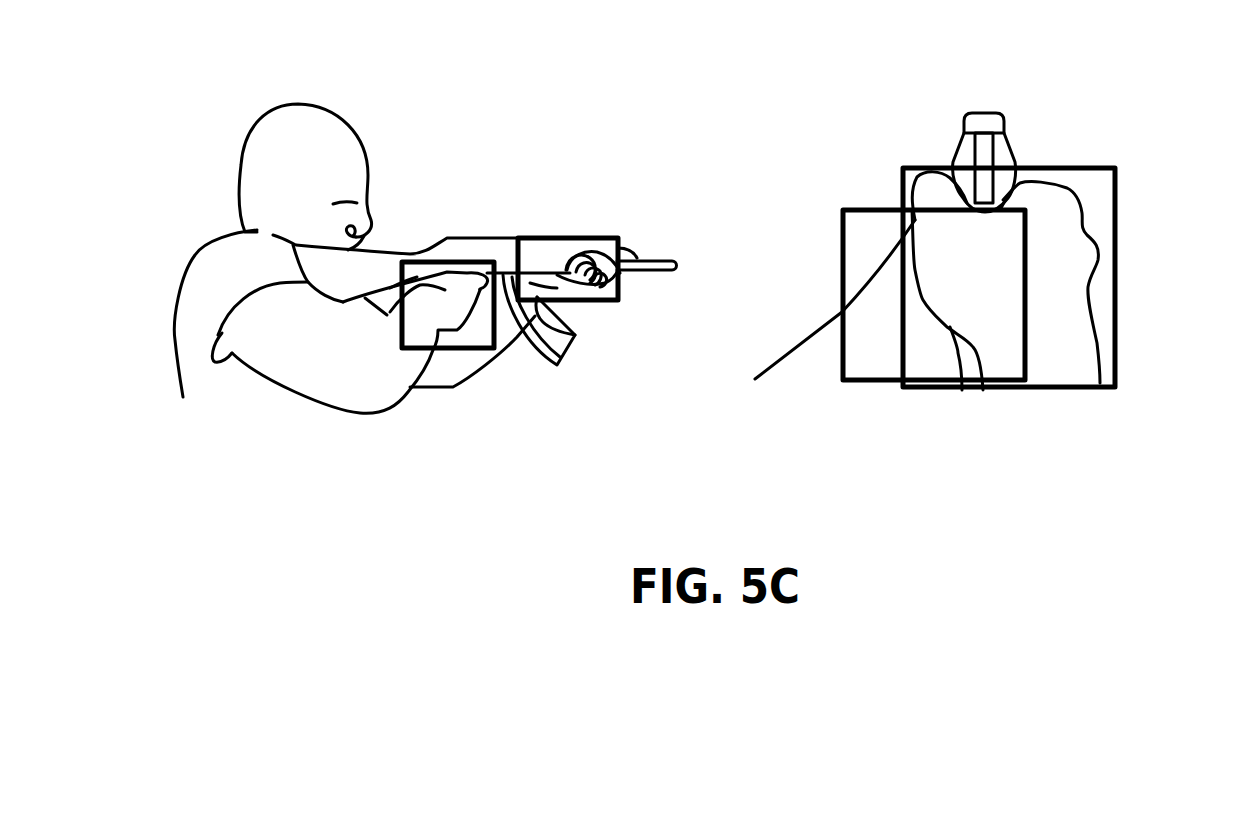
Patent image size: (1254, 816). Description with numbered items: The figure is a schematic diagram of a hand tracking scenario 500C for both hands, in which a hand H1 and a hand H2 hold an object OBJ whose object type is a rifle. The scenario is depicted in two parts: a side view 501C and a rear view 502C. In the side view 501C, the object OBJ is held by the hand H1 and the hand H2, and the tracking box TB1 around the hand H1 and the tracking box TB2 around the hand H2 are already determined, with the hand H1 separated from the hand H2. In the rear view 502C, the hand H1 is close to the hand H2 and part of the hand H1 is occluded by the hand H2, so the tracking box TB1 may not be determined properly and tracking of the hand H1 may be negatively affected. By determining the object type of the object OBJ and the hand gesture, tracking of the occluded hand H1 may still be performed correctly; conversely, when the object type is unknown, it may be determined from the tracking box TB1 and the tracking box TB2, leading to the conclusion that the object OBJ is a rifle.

The side view 501C is at (220, 77).
The rear view 502C is at (851, 80).
The hand tracking scenario 500C is at (1215, 505).
The object OBJ is at (487, 247).
The hand H1 is at (566, 262).
The hand H2 is at (448, 292).
The tracking box TB1 is at (607, 303).
The tracking box TB2 is at (450, 352).